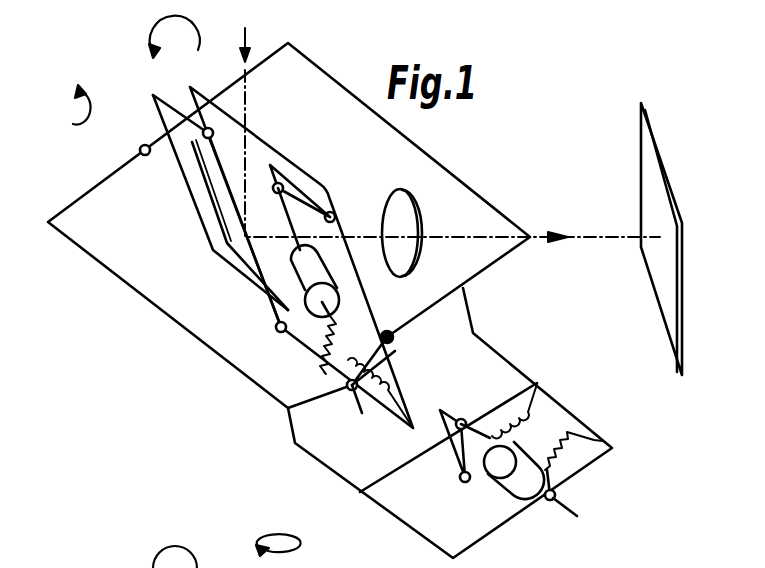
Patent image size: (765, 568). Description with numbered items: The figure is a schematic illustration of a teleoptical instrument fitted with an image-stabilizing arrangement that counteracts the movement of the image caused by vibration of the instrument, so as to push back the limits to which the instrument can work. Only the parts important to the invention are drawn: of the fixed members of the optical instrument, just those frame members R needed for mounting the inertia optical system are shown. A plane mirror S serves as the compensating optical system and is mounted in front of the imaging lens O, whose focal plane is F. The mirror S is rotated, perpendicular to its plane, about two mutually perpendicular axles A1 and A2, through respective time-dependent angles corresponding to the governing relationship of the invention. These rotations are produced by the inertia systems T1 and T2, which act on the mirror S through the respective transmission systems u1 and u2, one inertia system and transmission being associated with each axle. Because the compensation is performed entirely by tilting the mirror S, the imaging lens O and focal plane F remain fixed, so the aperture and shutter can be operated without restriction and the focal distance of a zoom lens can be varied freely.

The frame members R is at (217, 352).
The plane mirror S is at (226, 207).
The first axle A1 is at (207, 128).
The second axle A2 is at (141, 147).
The first transmission system u1 is at (332, 208).
The second transmission system u2 is at (449, 458).
The first inertia system T1 is at (312, 265).
The second inertia system T2 is at (520, 459).
The imaging lens O is at (410, 218).
The focal plane F is at (655, 192).